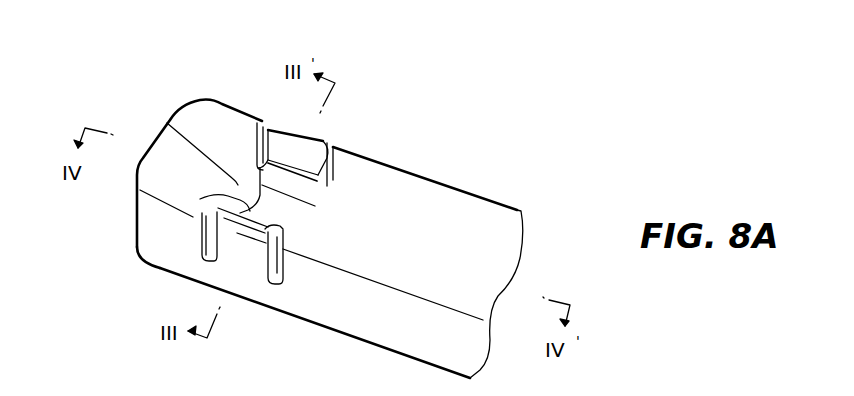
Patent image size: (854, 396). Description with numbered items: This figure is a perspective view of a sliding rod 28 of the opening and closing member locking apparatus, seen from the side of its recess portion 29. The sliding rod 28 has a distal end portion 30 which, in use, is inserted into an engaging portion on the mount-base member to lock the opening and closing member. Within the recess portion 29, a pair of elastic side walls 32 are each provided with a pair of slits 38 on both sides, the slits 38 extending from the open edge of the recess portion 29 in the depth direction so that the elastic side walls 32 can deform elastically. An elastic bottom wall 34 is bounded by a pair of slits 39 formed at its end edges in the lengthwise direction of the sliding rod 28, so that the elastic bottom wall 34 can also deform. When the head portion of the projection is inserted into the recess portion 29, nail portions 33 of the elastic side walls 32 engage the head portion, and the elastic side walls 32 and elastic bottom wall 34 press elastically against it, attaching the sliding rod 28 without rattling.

The sliding rod 28 is at (500, 216).
The recess portion 29 is at (167, 123).
The distal end portion 30 is at (154, 170).
The elastic side wall 32 is at (315, 133).
The nail portion 33 is at (332, 142).
The elastic bottom wall 34 is at (287, 217).
The slit 38 is at (258, 122).
The slit 39 is at (200, 199).